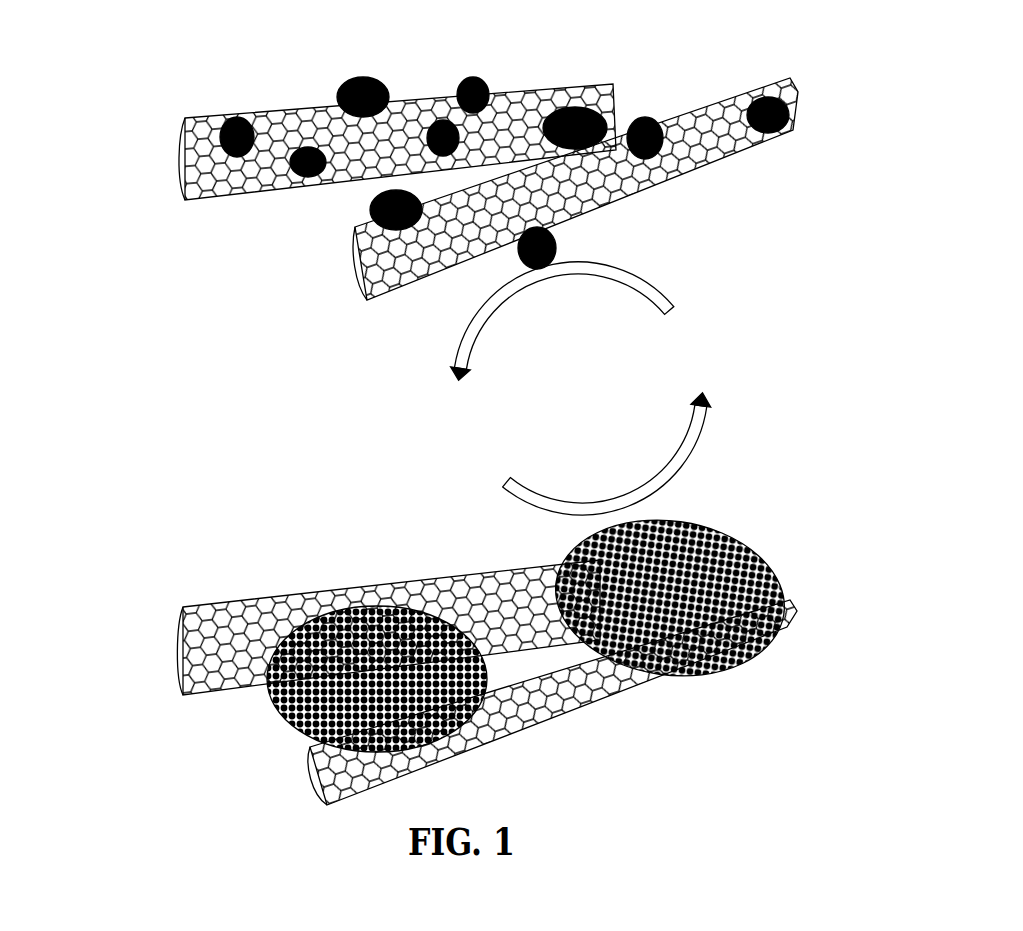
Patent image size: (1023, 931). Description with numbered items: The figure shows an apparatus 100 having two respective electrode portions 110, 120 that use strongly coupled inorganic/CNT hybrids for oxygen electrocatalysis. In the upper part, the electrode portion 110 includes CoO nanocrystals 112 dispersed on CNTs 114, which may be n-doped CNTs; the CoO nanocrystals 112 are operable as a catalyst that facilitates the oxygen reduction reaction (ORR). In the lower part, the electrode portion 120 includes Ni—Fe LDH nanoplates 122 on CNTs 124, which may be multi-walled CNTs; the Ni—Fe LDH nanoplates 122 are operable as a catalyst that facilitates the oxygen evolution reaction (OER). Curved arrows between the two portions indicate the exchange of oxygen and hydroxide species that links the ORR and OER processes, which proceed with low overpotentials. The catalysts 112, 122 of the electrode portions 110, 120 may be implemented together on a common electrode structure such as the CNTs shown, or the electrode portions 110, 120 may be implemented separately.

The apparatus 100 is at (925, 69).
The electrode portion 110 is at (161, 80).
The CoO nanocrystals 112 is at (370, 78).
The CNTs 114 is at (566, 78).
The electrode portion 120 is at (148, 605).
The Ni—Fe LDH nanoplates 122 is at (707, 522).
The CNTs 124 is at (453, 575).